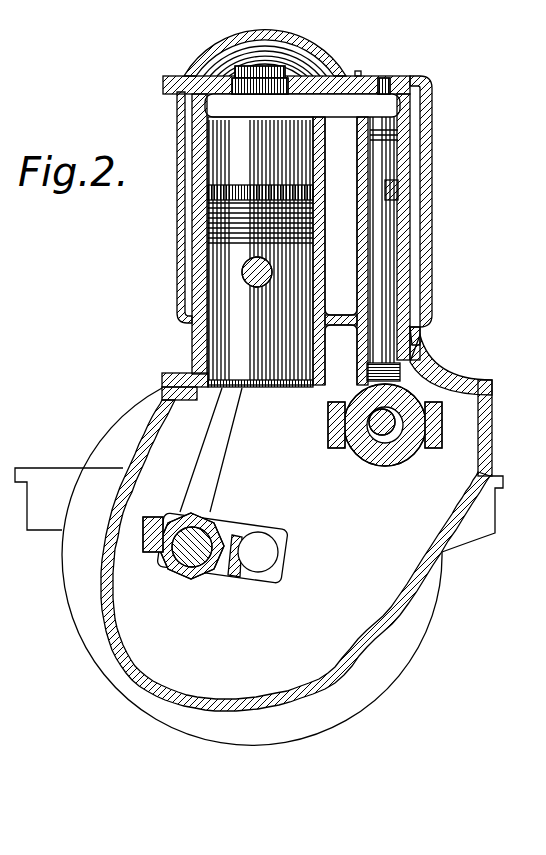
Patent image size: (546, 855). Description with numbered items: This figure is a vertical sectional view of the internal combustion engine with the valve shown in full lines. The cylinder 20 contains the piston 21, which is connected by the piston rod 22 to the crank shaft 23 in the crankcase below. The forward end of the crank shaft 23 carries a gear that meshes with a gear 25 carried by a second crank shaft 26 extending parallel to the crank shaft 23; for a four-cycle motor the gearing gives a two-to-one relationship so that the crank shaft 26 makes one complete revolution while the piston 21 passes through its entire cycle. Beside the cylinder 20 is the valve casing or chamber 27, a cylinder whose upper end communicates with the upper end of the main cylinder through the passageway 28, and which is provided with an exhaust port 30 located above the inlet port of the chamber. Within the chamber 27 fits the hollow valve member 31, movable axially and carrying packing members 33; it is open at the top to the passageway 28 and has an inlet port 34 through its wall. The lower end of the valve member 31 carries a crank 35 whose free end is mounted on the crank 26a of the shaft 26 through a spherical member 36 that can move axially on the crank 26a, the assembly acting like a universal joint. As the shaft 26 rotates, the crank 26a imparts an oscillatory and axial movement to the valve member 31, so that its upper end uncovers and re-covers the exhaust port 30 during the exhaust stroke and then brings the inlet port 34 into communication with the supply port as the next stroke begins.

The cylinder 20 is at (175, 215).
The piston 21 is at (223, 357).
The piston rod 22 is at (208, 462).
The crank shaft 23 is at (267, 552).
The gear 25 is at (90, 346).
The crank shaft 26 is at (378, 468).
The crank 26a is at (345, 431).
The valve casing or chamber 27 is at (405, 197).
The passageway 28 is at (343, 108).
The exhaust port 30 is at (378, 163).
The valve member 31 is at (387, 290).
The packing members 33 is at (412, 124).
The inlet port 34 is at (372, 221).
The crank 35 is at (410, 364).
The spherical member 36 is at (413, 388).